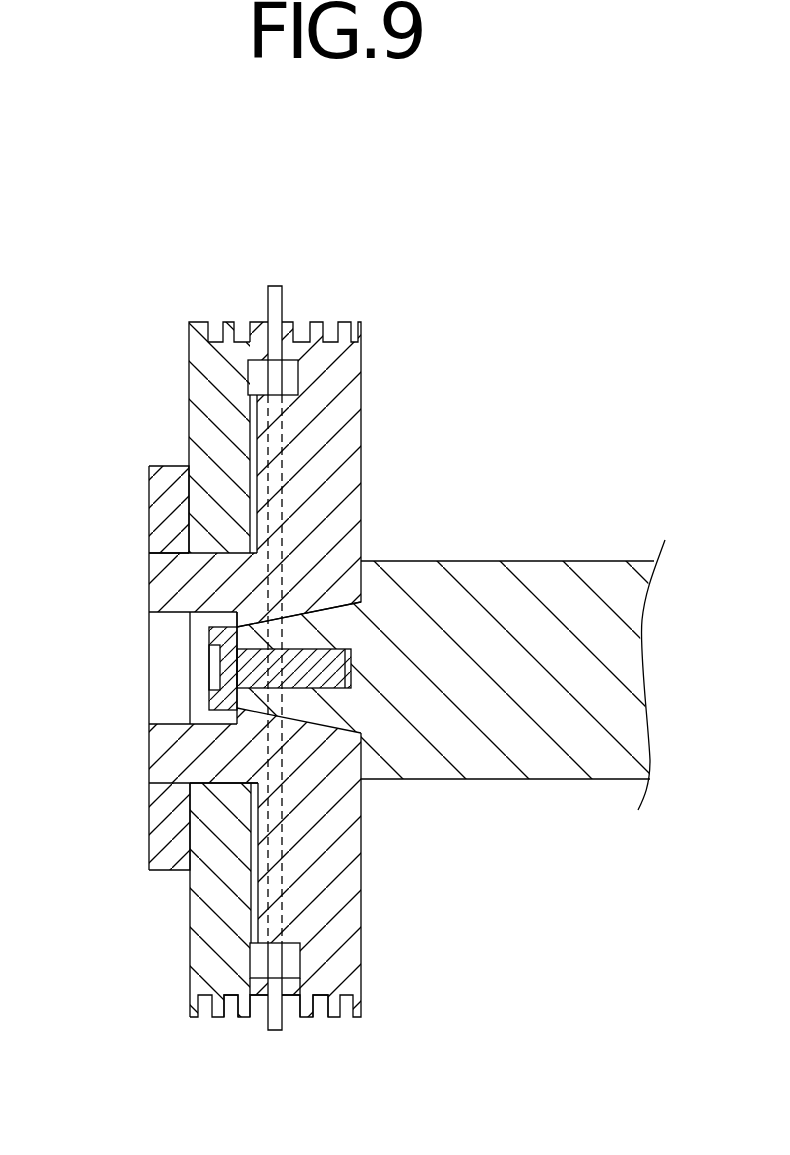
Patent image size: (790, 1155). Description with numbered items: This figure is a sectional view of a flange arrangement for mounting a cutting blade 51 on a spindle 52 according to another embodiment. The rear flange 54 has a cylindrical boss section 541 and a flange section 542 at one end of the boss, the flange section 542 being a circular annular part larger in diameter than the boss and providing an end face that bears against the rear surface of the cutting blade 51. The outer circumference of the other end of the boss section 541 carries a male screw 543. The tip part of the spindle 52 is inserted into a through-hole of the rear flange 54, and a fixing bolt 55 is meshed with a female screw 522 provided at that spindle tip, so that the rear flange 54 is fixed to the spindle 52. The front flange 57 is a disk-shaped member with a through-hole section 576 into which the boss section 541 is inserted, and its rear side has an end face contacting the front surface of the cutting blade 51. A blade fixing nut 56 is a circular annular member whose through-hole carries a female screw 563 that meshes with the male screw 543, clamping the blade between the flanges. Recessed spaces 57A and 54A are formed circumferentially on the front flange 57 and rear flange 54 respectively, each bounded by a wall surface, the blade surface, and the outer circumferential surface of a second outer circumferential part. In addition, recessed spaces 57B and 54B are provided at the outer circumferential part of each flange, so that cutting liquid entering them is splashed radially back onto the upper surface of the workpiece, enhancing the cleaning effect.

The cutting blade 51 is at (274, 260).
The spindle 52 is at (572, 538).
The rear flange 54 is at (259, 681).
The flange section 542 is at (343, 438).
The male screw 543 is at (170, 563).
The cylindrical boss section 541 is at (163, 753).
The female screw 522 is at (352, 668).
The fixing bolt 55 is at (200, 662).
The blade fixing nut 56 is at (134, 624).
The female screw 563 is at (152, 549).
The through-hole section 576 is at (222, 785).
The front flange 57 is at (197, 681).
The recessed space 57A is at (256, 1027).
The recessed space 57B is at (228, 1027).
The recessed space 54A is at (294, 1027).
The recessed space 54B is at (323, 1027).